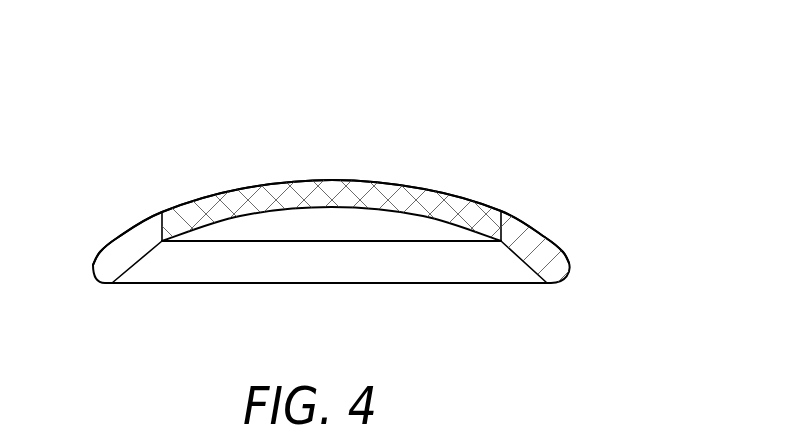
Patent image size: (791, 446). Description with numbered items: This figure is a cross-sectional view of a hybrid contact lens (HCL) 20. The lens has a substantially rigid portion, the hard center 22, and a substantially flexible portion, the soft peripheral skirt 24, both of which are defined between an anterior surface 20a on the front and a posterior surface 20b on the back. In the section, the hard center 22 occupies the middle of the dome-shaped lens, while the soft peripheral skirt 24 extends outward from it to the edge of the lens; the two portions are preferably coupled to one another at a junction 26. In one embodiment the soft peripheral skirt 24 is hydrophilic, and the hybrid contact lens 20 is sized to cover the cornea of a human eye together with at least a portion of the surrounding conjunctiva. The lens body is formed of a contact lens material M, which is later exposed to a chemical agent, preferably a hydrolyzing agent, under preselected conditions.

The hybrid contact lens 20 is at (573, 101).
The anterior surface 20a is at (347, 180).
The posterior surface 20b is at (297, 210).
The hard center 22 is at (241, 194).
The soft peripheral skirt 24 is at (138, 238).
The junction 26 is at (465, 253).
The contact lens material M is at (465, 217).